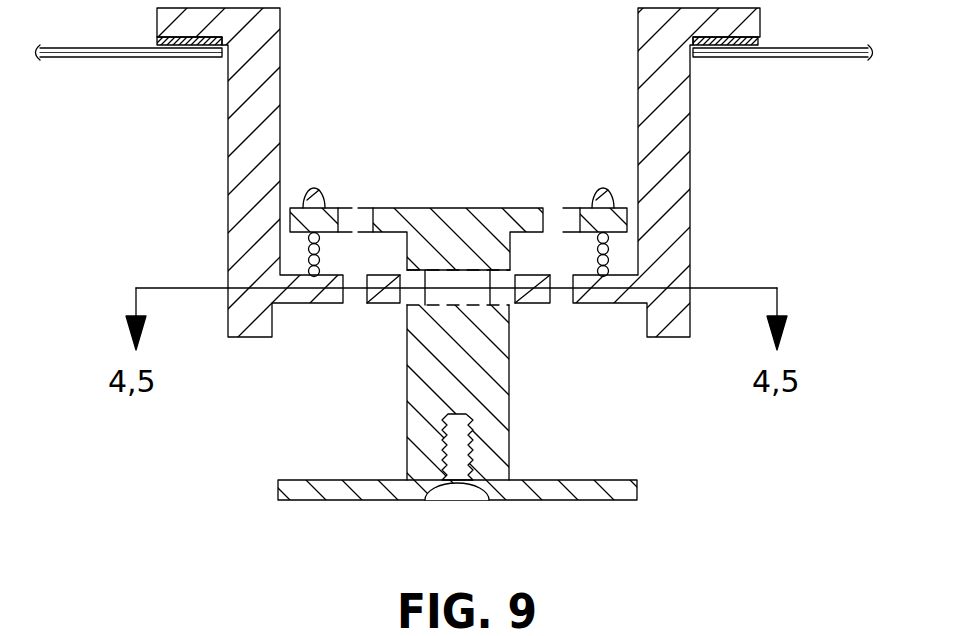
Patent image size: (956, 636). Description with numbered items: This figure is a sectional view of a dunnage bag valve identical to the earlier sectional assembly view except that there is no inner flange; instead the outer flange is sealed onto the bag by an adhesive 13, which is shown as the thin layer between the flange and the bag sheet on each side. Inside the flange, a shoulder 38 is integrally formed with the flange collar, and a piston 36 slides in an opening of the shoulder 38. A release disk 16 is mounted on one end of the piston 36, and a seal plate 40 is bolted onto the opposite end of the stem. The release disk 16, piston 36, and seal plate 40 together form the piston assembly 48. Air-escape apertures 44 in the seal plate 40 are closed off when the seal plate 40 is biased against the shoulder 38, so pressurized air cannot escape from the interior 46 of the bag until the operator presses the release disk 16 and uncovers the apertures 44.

The adhesive 13 is at (157, 43).
The release disk 16 is at (398, 216).
The piston 36 is at (423, 372).
The shoulder 38 is at (300, 297).
The seal plate 40 is at (613, 487).
The air-escape apertures 44 is at (357, 297).
The interior 46 is at (707, 395).
The piston assembly 48 is at (306, 418).